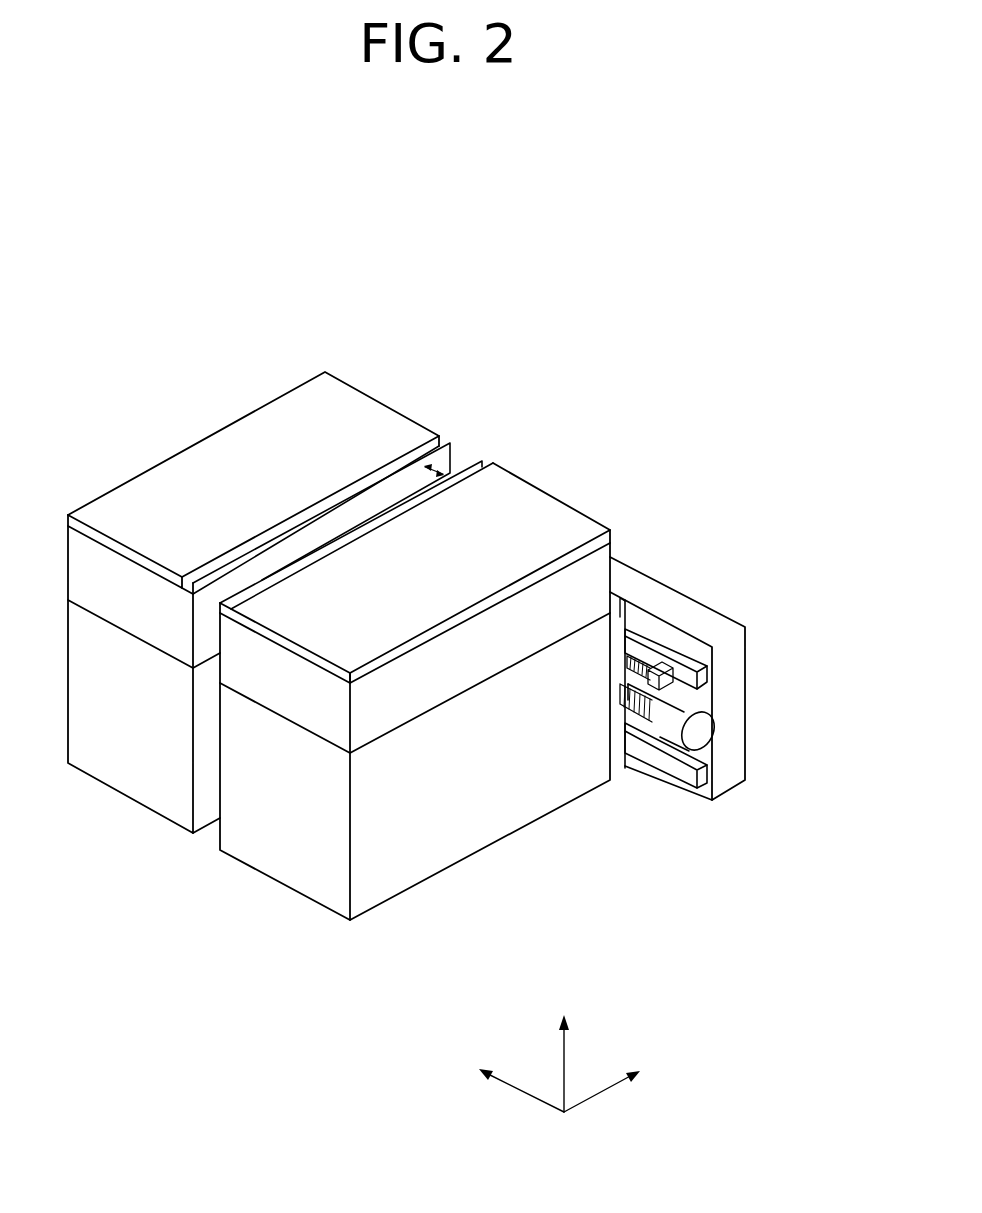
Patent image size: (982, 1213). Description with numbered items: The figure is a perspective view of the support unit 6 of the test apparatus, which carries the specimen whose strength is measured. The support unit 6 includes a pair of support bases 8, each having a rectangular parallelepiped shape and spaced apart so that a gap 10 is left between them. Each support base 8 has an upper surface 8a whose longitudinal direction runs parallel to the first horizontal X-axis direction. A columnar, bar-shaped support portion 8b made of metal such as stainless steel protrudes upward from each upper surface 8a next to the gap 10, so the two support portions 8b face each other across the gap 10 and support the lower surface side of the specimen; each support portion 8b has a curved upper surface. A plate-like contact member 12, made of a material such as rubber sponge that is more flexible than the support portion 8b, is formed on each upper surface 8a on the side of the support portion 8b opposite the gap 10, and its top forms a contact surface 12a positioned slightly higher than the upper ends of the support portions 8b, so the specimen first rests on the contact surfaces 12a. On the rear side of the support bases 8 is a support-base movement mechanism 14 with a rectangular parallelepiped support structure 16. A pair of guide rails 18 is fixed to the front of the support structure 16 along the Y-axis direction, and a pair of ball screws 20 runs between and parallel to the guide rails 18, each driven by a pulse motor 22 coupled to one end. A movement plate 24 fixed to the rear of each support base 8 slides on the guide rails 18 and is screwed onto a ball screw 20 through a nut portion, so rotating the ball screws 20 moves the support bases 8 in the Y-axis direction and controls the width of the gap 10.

The support unit 6 is at (176, 358).
The support base 8 is at (130, 782).
The upper surface 8a is at (100, 542).
The support portion 8b is at (287, 568).
The gap 10 is at (453, 458).
The contact member 12 is at (365, 384).
The contact surface 12a is at (290, 410).
The support-base movement mechanism 14 is at (759, 621).
The support structure 16 is at (700, 617).
The guide rail 18 is at (707, 678).
The ball screw 20 is at (627, 671).
The pulse motor 22 is at (702, 734).
The movement plate 24 is at (618, 614).